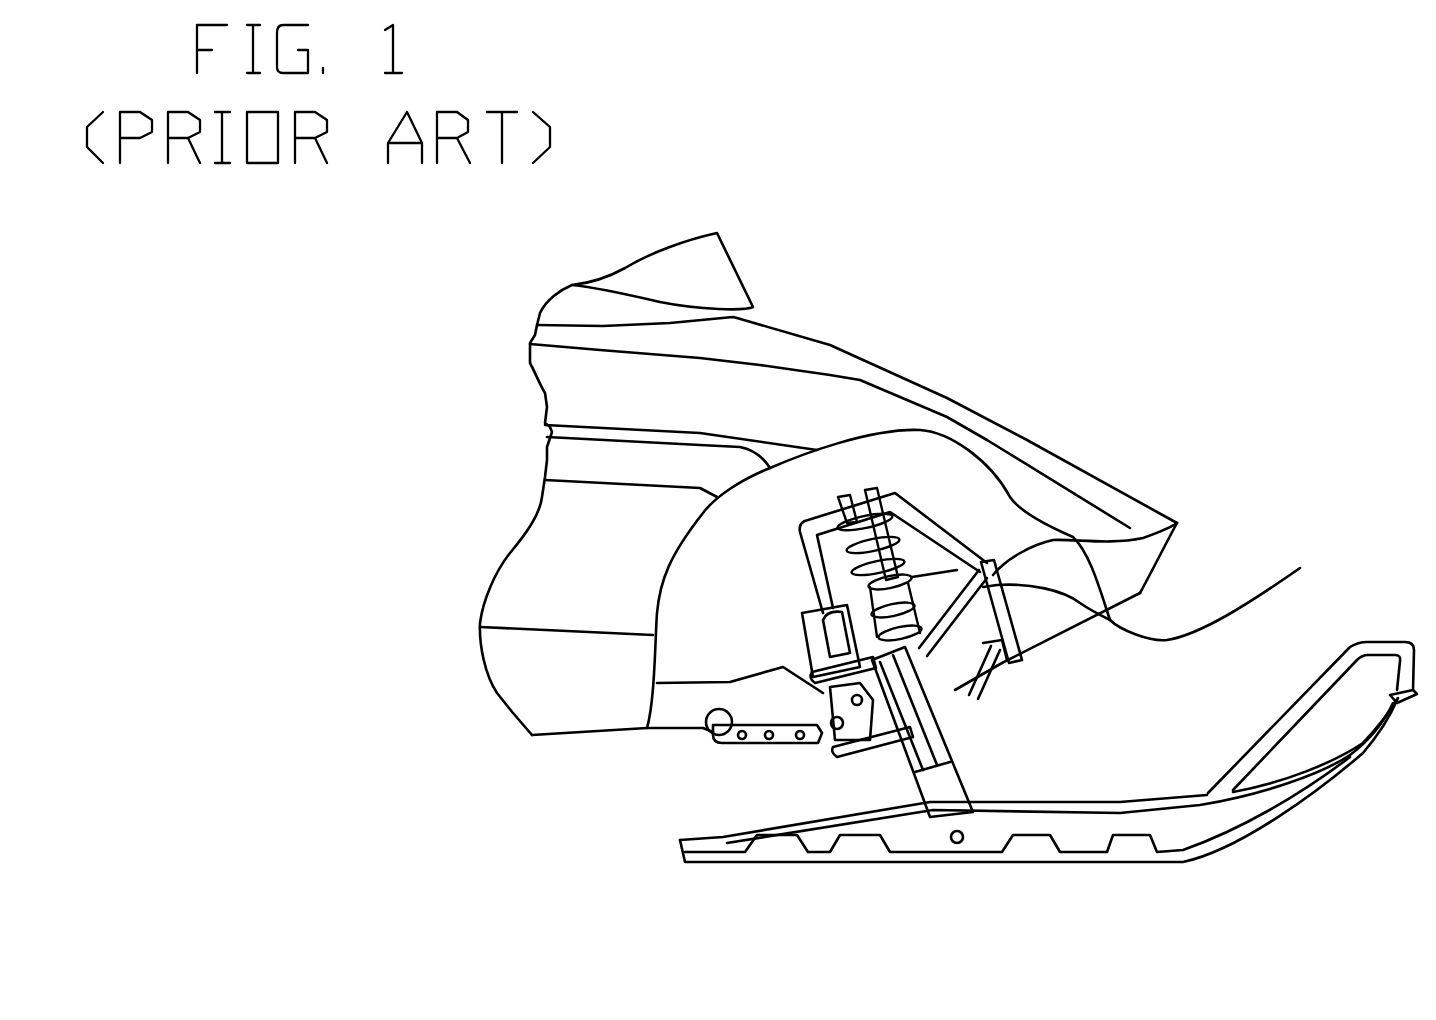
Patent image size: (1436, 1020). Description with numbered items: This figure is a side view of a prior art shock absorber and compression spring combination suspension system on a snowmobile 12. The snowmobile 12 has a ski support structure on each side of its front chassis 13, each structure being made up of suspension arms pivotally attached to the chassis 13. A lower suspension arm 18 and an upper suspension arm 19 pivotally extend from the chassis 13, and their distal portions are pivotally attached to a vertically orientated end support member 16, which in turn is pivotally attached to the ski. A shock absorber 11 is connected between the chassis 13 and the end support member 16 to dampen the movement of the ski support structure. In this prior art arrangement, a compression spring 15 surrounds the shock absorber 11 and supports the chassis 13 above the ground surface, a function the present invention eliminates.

The shock absorber 11 is at (917, 590).
The snowmobile 12 is at (792, 352).
The chassis 13 is at (1177, 523).
The compression spring 15 is at (890, 577).
The end support member 16 is at (900, 745).
The lower suspension arm 18 is at (977, 707).
The upper suspension arm 19 is at (1164, 609).